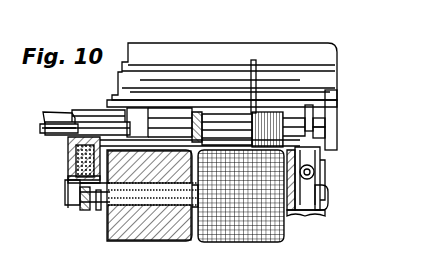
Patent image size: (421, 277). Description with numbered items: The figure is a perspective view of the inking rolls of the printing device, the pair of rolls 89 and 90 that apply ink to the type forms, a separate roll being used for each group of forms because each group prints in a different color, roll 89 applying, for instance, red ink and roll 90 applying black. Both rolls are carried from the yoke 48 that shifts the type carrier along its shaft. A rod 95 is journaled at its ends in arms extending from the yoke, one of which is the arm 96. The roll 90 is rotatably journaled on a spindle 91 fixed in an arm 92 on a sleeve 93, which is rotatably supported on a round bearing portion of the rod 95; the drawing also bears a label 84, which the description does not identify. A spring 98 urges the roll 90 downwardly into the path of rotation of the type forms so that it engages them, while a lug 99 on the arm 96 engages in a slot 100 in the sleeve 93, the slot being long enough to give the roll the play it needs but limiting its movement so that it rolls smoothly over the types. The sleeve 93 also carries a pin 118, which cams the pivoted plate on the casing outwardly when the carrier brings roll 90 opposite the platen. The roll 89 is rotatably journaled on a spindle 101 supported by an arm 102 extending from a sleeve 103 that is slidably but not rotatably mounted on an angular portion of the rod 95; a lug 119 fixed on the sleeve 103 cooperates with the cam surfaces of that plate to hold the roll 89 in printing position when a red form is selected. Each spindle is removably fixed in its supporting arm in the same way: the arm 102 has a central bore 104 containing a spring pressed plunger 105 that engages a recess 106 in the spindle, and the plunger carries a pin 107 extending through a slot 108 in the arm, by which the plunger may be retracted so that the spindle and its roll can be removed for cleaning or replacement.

The yoke 48 is at (222, 75).
The spring 98 is at (258, 90).
The rod 95 is at (53, 118).
The sleeve 103 is at (88, 112).
The lug 119 is at (159, 122).
The sleeve 93 is at (292, 110).
The collar 84 is at (298, 116).
The pin 118 is at (313, 108).
The arm 96 is at (330, 112).
The lug 99 is at (325, 122).
The slot 100 is at (325, 133).
The arm 102 is at (72, 153).
The spring pressed plunger 105 is at (85, 165).
The pin 107 is at (68, 179).
The spindle 101 is at (68, 192).
The central bore 104 is at (82, 210).
The recess 106 is at (98, 205).
The inking roll 89 is at (140, 233).
The inking roll 90 is at (238, 242).
The arm 92 is at (322, 188).
The slot 108 is at (312, 167).
The spindle 91 is at (327, 198).